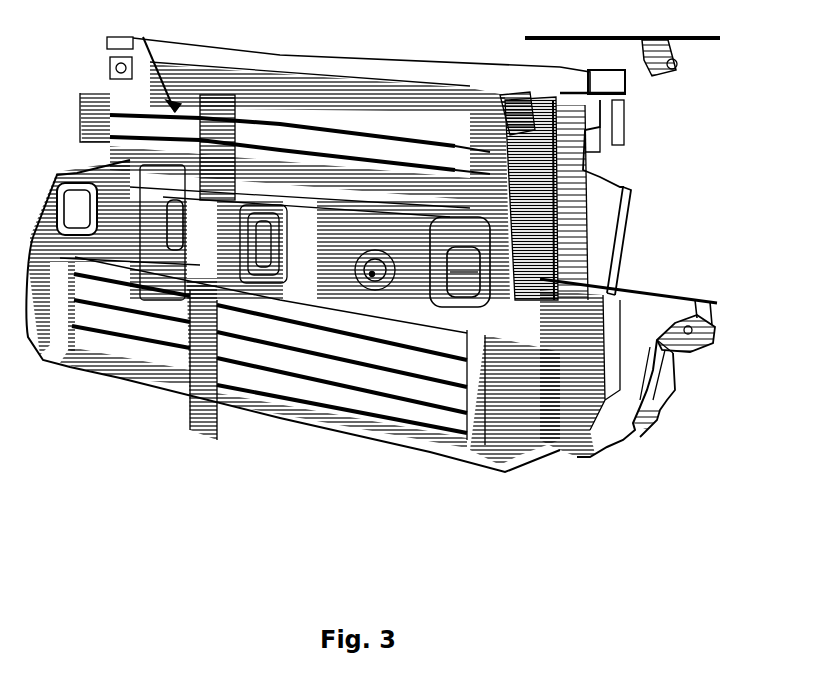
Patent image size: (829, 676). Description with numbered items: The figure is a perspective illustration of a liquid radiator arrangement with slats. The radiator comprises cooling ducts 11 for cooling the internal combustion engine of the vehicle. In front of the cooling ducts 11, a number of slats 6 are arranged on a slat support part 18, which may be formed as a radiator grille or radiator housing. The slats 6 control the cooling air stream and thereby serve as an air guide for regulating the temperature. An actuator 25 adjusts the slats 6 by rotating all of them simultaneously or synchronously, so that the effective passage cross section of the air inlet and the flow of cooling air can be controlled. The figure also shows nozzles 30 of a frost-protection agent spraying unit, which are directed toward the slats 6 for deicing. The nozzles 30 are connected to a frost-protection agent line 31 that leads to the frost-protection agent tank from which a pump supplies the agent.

The slats 6 is at (163, 125).
The actuator 25 is at (610, 38).
The cooling ducts 11 is at (555, 221).
The frost-protection agent line 31 is at (697, 300).
The nozzles 30 is at (147, 173).
The slat support part 18 is at (523, 465).